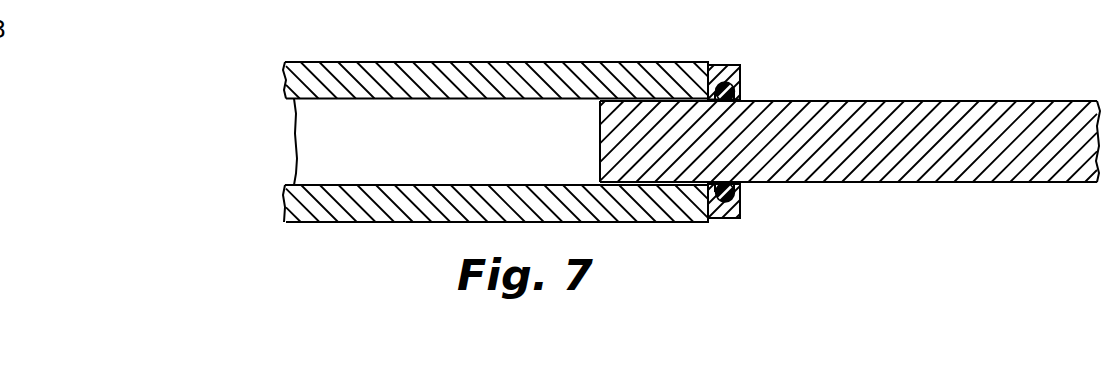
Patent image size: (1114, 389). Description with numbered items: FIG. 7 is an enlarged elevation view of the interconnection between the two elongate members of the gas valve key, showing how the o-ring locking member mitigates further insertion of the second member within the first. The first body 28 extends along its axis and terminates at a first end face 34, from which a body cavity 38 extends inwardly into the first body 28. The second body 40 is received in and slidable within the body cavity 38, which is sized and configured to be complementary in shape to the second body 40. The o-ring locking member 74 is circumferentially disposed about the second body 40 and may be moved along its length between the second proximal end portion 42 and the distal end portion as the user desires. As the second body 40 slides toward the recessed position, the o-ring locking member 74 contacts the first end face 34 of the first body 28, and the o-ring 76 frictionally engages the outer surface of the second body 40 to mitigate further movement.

The first body 28 is at (348, 205).
The first end face 34 is at (708, 62).
The body cavity 38 is at (307, 141).
The second body 40 is at (925, 170).
The second proximal end portion 42 is at (613, 143).
The o-ring locking member 74 is at (738, 75).
The o-ring 76 is at (733, 98).